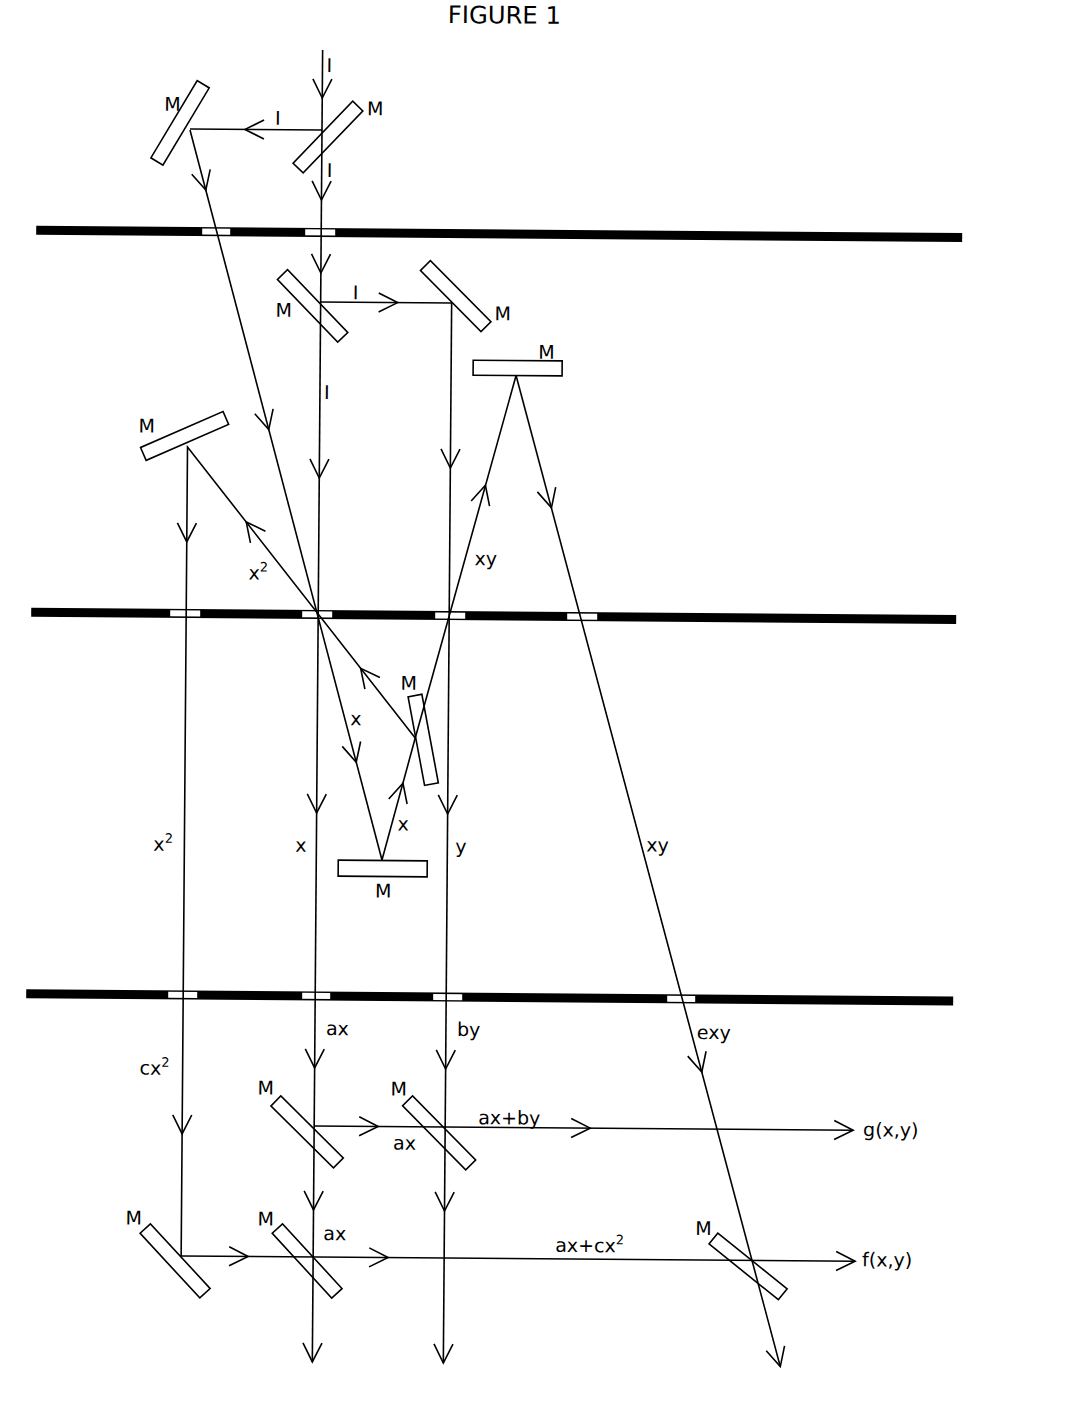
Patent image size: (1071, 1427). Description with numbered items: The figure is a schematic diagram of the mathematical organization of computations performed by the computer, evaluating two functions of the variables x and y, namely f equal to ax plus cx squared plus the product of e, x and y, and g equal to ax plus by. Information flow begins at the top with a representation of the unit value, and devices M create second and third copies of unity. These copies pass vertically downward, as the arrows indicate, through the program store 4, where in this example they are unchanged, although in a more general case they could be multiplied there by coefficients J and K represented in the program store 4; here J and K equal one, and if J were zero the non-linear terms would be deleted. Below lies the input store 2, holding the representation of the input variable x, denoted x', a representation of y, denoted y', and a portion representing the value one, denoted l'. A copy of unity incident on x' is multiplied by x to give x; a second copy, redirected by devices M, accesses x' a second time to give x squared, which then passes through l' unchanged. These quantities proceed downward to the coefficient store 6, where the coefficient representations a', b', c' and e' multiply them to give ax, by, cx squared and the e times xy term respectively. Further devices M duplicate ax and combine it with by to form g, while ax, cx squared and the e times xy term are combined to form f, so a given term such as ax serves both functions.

The program store 4 is at (866, 226).
The input store 2 is at (864, 610).
The coefficient store 6 is at (864, 988).
The coefficient J is at (226, 227).
The coefficient K is at (310, 227).
The representation of the value 1 l' is at (386, 590).
The representation of the input variable x x' is at (327, 590).
The representation of the input variable y y' is at (442, 591).
The representation of the coefficient a a' is at (327, 972).
The representation of the coefficient b b' is at (458, 973).
The representation of the coefficient c c' is at (193, 971).
The representation of the coefficient e e' is at (691, 974).